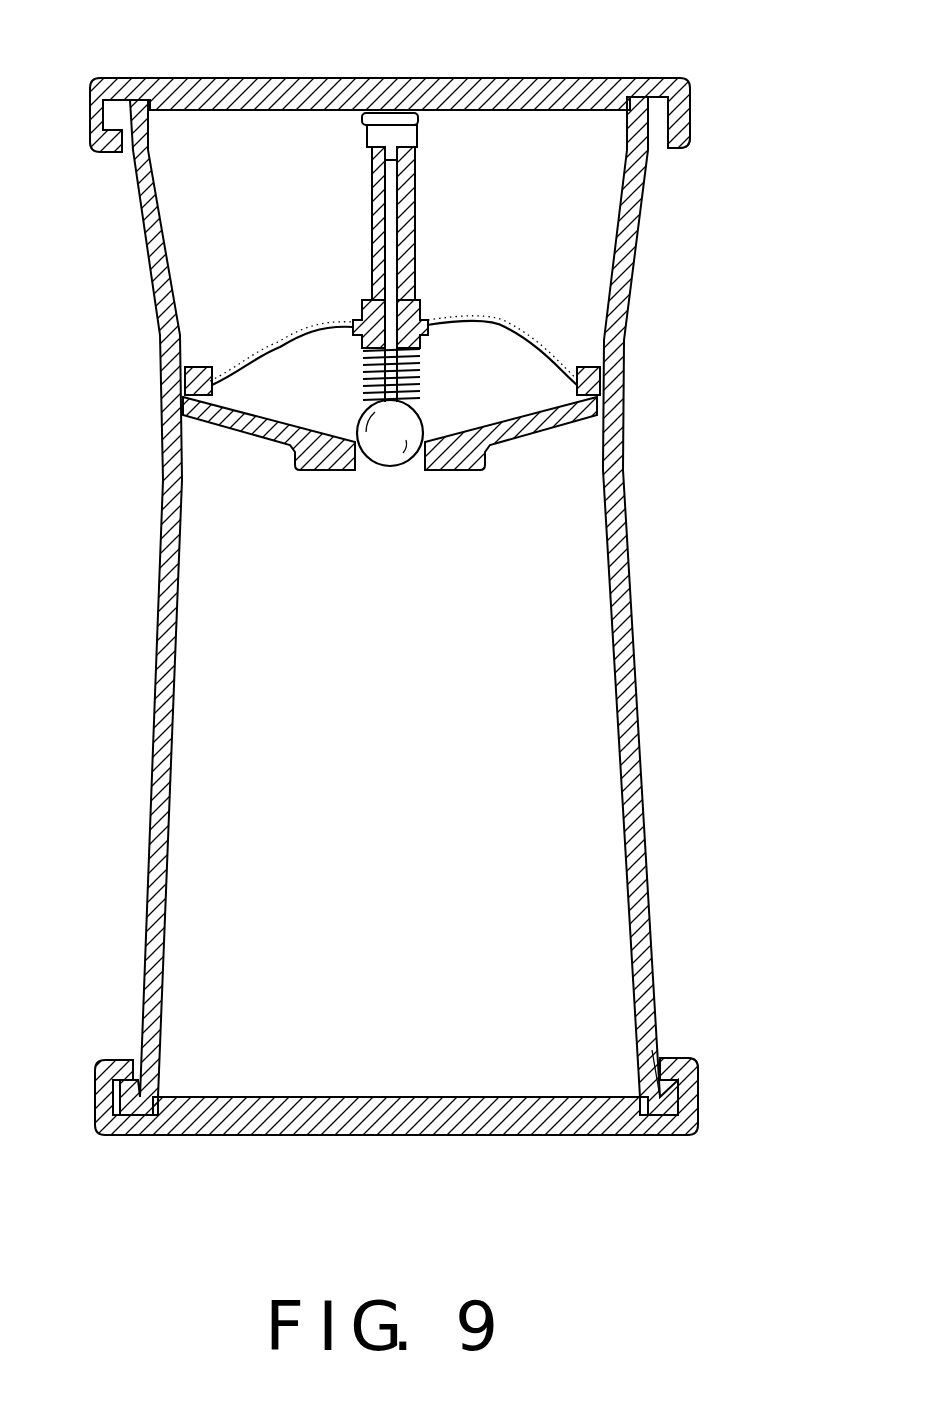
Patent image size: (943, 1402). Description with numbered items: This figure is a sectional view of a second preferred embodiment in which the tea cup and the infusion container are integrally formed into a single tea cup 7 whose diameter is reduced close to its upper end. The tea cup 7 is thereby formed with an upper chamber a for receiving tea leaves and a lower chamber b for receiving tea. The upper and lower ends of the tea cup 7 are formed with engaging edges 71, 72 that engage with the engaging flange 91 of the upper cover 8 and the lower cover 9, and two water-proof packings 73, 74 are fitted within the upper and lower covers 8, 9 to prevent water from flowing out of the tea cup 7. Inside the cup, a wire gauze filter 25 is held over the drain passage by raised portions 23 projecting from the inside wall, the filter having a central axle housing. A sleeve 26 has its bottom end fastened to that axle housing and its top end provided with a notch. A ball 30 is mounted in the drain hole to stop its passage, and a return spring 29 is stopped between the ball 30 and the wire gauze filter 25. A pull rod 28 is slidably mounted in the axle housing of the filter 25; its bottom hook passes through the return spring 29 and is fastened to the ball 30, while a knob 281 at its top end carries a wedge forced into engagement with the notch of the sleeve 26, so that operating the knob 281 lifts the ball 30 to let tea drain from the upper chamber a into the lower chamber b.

The tea cup 7 is at (620, 445).
The upper cover 8 is at (458, 78).
The lower cover 9 is at (428, 1135).
The raised portions 23 is at (190, 357).
The wire gauze filter 25 is at (490, 327).
The sleeve 26 is at (413, 242).
The pull rod 28 is at (387, 230).
The return spring 29 is at (420, 372).
The ball 30 is at (390, 458).
The engaging edge 71 is at (652, 150).
The engaging edge 72 is at (672, 1085).
The water-proof packing 73 is at (647, 78).
The water-proof packing 74 is at (655, 1130).
The engaging flange 91 is at (675, 1057).
The knob 281 is at (369, 133).
The upper chamber a is at (200, 208).
The lower chamber b is at (200, 797).